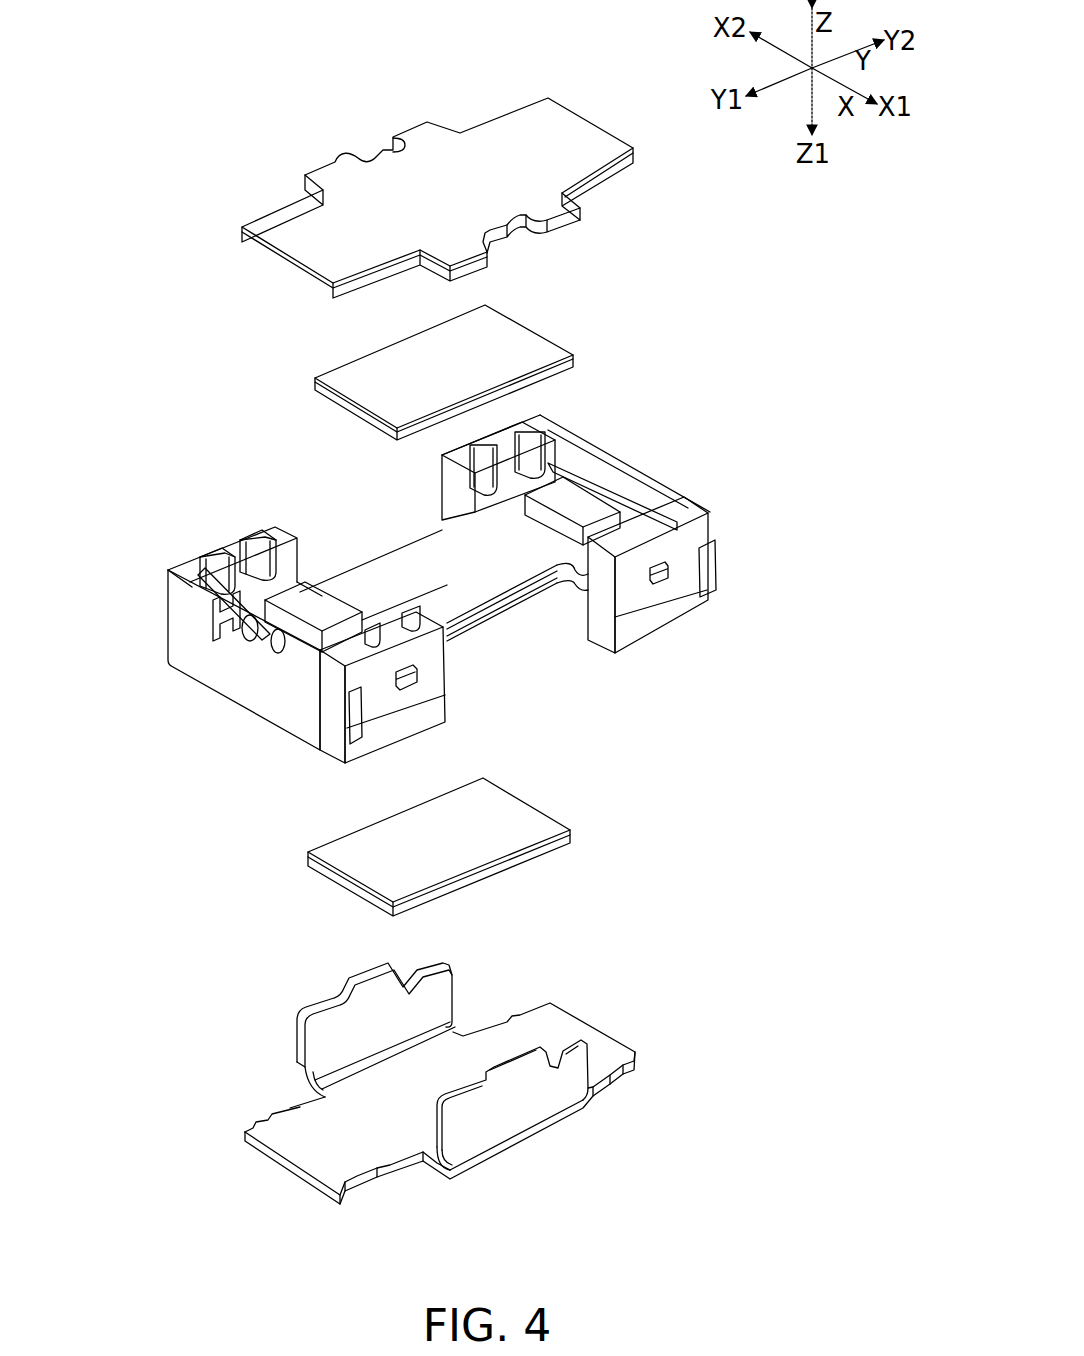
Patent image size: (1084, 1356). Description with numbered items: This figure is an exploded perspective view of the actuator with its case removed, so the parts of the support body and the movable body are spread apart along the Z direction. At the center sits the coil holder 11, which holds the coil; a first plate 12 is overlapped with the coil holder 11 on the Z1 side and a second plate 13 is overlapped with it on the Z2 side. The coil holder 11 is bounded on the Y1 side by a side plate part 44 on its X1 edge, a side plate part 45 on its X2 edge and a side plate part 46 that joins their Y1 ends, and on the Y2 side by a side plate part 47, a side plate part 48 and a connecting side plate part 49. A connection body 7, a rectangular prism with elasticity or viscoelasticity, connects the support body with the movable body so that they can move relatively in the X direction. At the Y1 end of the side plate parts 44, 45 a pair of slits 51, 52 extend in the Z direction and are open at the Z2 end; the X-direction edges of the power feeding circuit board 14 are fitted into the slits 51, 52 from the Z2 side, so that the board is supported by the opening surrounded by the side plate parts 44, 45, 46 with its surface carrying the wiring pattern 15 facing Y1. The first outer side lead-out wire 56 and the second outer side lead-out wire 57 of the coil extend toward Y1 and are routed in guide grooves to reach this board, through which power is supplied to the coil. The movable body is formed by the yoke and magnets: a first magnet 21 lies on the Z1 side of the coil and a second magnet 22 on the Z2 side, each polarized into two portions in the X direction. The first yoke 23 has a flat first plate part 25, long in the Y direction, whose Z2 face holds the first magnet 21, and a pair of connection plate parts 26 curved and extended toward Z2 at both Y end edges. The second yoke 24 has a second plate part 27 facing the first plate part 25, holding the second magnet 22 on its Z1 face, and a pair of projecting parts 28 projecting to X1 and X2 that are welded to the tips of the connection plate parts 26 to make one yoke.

The connection body 7 is at (323, 607).
The coil holder 11 is at (403, 577).
The first plate 12 is at (480, 637).
The second plate 13 is at (403, 570).
The power feeding circuit board 14 is at (205, 597).
The wiring pattern 15 is at (222, 625).
The first magnet 21 is at (520, 817).
The second magnet 22 is at (510, 333).
The first yoke 23 is at (480, 1085).
The second yoke 24 is at (484, 198).
The first plate part 25 is at (312, 1150).
The connection plate parts 26 is at (338, 1048).
The second plate part 27 is at (317, 237).
The projecting parts 28 is at (338, 168).
The side plate part 44 is at (393, 700).
The side plate part 45 is at (238, 538).
The side plate part 46 is at (193, 668).
The side plate part 47 is at (640, 598).
The side plate part 48 is at (497, 430).
The side plate part 49 is at (657, 482).
The slit 51 is at (340, 657).
The slit 52 is at (200, 575).
The first outer side lead-out wire 56 is at (270, 673).
The second outer side lead-out wire 57 is at (242, 660).